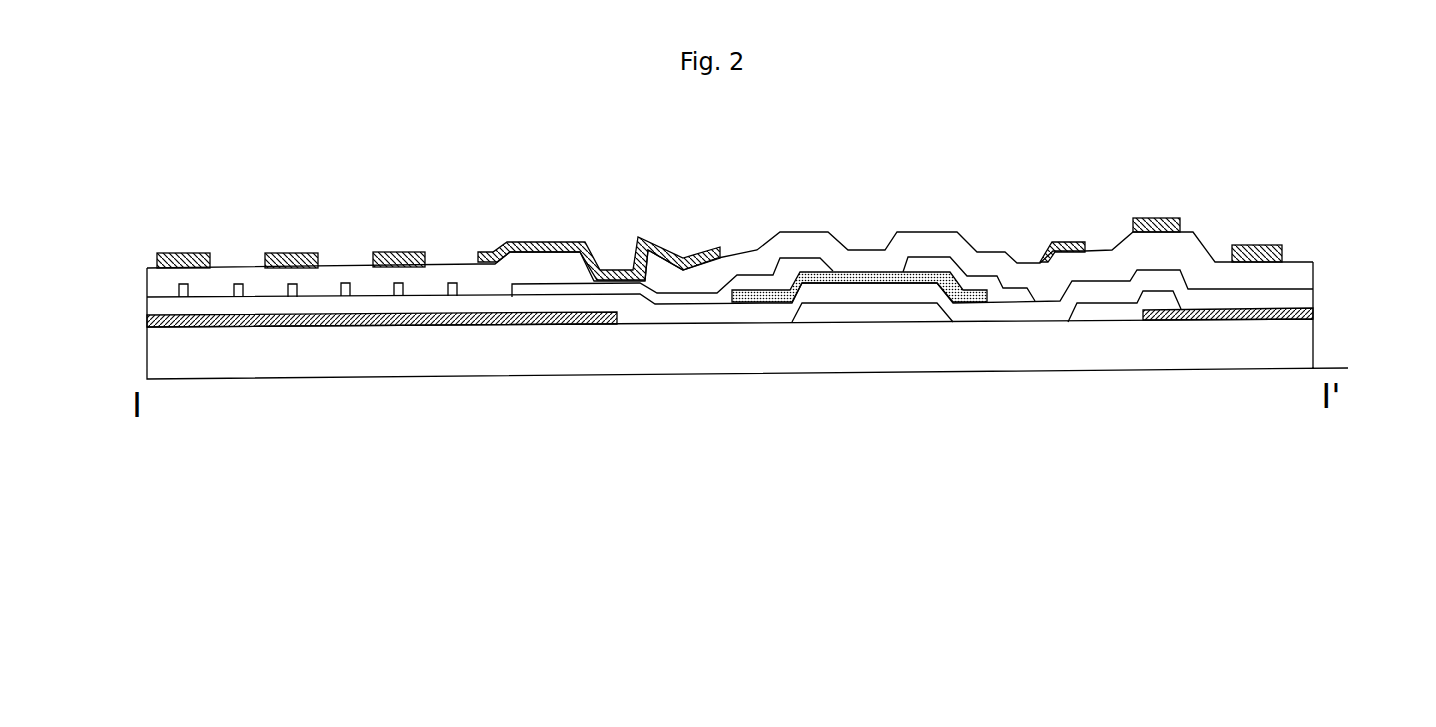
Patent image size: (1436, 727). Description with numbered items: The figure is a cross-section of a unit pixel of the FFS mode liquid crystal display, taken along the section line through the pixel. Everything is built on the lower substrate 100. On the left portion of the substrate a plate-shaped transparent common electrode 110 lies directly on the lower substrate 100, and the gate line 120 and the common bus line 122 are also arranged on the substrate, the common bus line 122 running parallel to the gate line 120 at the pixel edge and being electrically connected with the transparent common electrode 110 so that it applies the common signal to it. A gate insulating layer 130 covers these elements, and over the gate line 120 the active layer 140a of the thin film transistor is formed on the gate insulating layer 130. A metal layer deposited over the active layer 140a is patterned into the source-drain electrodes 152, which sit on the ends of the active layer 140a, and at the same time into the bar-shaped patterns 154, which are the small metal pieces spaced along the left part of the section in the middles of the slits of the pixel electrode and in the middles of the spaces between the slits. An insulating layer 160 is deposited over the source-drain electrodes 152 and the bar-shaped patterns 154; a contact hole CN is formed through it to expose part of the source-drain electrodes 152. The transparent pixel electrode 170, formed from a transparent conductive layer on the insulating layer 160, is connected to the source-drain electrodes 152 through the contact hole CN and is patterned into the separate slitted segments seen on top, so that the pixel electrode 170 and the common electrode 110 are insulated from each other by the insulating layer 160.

The lower substrate 100 is at (1307, 357).
The transparent common electrode 110 is at (533, 330).
The gate line 120 is at (866, 318).
The common bus line 122 is at (1106, 313).
The gate insulating layer 130 is at (1307, 297).
The active layer 140a is at (865, 275).
The source-drain electrodes 152 is at (795, 262).
The bar-shaped patterns 154 is at (238, 284).
The insulating layer 160 is at (1308, 272).
The transparent pixel electrode 170 is at (176, 253).
The contact holes CN is at (612, 211).